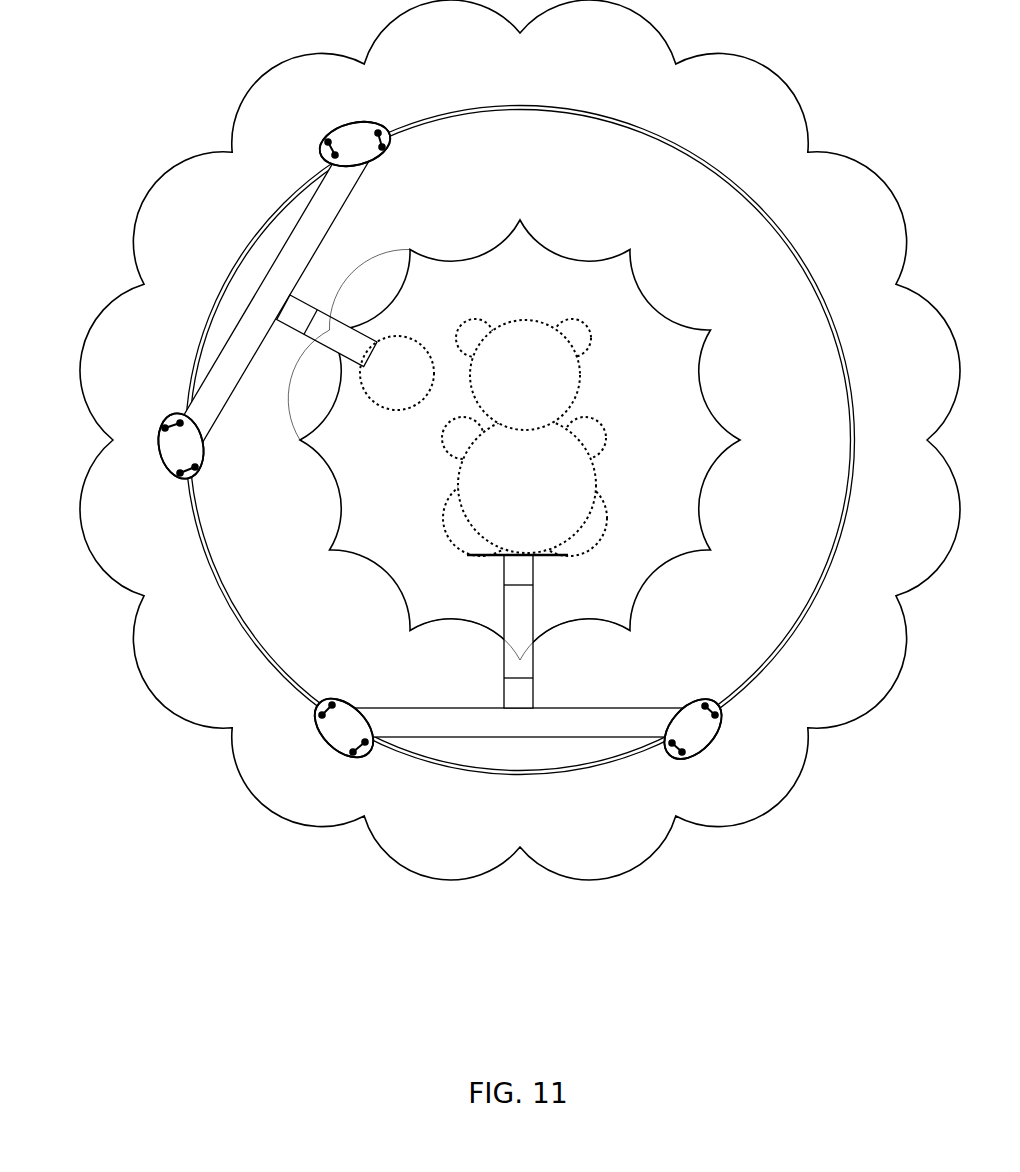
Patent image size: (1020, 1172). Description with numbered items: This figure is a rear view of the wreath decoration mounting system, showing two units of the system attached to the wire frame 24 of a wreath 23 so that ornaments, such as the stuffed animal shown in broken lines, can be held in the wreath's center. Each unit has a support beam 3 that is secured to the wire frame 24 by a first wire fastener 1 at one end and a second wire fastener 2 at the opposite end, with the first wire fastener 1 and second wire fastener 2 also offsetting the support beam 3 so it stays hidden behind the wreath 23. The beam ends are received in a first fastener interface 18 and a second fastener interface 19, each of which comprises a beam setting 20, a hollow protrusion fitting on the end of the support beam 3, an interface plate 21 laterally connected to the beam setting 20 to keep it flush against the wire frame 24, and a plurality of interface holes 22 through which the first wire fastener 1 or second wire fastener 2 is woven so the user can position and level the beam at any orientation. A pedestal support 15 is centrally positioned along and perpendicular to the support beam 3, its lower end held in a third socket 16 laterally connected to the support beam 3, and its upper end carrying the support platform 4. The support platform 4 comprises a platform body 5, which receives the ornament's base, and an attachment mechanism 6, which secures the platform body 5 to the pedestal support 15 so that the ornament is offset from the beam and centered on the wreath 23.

The first wire fastener 1 is at (327, 147).
The second wire fastener 2 is at (174, 412).
The support beam 3 is at (220, 398).
The support platform 4 is at (543, 450).
The platform body 5 is at (480, 556).
The attachment mechanism 6 is at (531, 542).
The pedestal support 15 is at (330, 322).
The third socket 16 is at (285, 313).
The first fastener interface 18 is at (302, 401).
The second fastener interface 19 is at (387, 609).
The beam setting 20 is at (362, 167).
The interface plate 21 is at (358, 132).
The plurality of interface holes 22 is at (388, 152).
The wreath 23 is at (795, 133).
The wire frame 24 is at (690, 153).